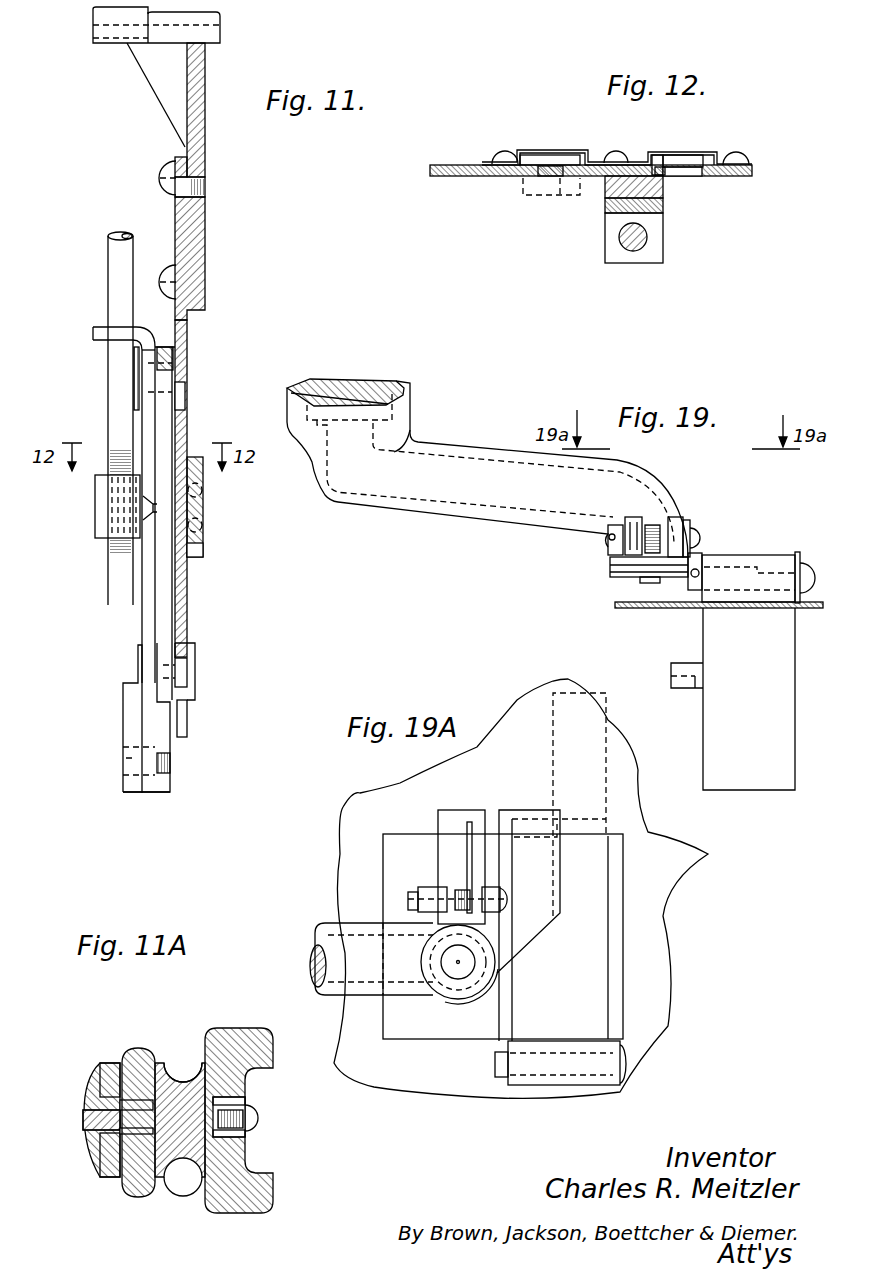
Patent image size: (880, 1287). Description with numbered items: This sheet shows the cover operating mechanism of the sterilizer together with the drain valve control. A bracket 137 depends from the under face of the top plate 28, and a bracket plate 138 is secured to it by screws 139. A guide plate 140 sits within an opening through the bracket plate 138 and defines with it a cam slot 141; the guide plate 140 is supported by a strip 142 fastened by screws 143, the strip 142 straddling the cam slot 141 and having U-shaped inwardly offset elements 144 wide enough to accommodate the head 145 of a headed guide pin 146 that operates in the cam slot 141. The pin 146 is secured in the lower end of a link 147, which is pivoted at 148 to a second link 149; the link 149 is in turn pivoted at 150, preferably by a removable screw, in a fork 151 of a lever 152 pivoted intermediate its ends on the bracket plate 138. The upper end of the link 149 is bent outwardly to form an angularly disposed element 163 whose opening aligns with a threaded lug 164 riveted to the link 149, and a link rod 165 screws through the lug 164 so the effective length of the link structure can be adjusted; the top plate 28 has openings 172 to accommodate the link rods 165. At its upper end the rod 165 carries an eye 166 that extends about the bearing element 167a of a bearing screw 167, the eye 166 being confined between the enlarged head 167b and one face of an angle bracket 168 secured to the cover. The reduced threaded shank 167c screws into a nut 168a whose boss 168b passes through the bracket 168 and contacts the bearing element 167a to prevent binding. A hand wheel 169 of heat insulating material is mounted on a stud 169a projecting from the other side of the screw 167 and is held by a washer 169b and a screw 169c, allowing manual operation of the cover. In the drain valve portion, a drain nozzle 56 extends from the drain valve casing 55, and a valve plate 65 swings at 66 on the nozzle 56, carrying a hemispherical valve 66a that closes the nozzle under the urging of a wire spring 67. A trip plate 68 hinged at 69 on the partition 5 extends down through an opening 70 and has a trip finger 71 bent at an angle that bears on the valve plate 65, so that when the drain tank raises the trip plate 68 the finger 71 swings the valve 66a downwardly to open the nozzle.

In FIG. 19, the partition 5 is at (641, 610).
In FIG. 19A, the partition 5 is at (665, 878).
In FIG. 11, the top plate 28 is at (213, 37).
In FIG. 19, the drain valve casing 55 is at (404, 392).
In FIG. 19, the drain nozzle 56 is at (461, 450).
In FIG. 19A, the drain nozzle 56 is at (342, 924).
In FIG. 19, the valve plate 65 is at (602, 568).
In FIG. 19A, the valve plate 65 is at (444, 813).
In FIG. 19, the pivot 66 is at (594, 540).
In FIG. 19A, the pivot 66 is at (400, 897).
In FIG. 19, the hemispherical valve 66a is at (612, 562).
In FIG. 19A, the hemispherical valve 66a is at (489, 968).
In FIG. 19, the wire spring 67 is at (645, 525).
In FIG. 19A, the wire spring 67 is at (461, 822).
In FIG. 19, the trip plate 68 is at (705, 735).
In FIG. 19A, the trip plate 68 is at (545, 742).
In FIG. 19, the hinge 69 is at (764, 566).
In FIG. 19A, the hinge 69 is at (487, 1063).
In FIG. 19A, the opening 70 is at (608, 949).
In FIG. 19, the trip finger 71 is at (680, 680).
In FIG. 19A, the trip finger 71 is at (525, 818).
In FIG. 11, the bracket 137 is at (197, 140).
In FIG. 11, the bracket plate 138 is at (168, 223).
In FIG. 12, the bracket plate 138 is at (449, 177).
In FIG. 11, the screws 139 is at (165, 174).
In FIG. 11, the guide plate 140 is at (180, 580).
In FIG. 12, the guide plate 140 is at (588, 177).
In FIG. 11, the cam slot 141 is at (177, 394).
In FIG. 12, the cam slot 141 is at (553, 172).
In FIG. 11, the strip 142 is at (181, 457).
In FIG. 12, the strip 142 is at (594, 160).
In FIG. 11, the screws 143 is at (194, 527).
In FIG. 12, the screws 143 is at (492, 151).
In FIG. 11, the inwardly offset elements 144 is at (196, 549).
In FIG. 12, the inwardly offset elements 144 is at (682, 152).
In FIG. 11, the head 145 is at (185, 669).
In FIG. 12, the head 145 is at (527, 160).
In FIG. 11, the headed guide pin 146 is at (177, 682).
In FIG. 12, the headed guide pin 146 is at (656, 183).
In FIG. 11, the link 147 is at (157, 603).
In FIG. 12, the link 147 is at (599, 180).
In FIG. 11, the pivot 148 is at (189, 352).
In FIG. 11, the second link 149 is at (132, 603).
In FIG. 12, the second link 149 is at (657, 217).
In FIG. 11, the pivot 150 is at (162, 772).
In FIG. 11, the fork 151 is at (125, 794).
In FIG. 11, the lever 152 is at (130, 660).
In FIG. 11, the angularly disposed element 163 is at (92, 328).
In FIG. 11, the lug 164 is at (86, 515).
In FIG. 12, the lug 164 is at (647, 253).
In FIG. 11, the link rod 165 is at (102, 262).
In FIG. 12, the link rod 165 is at (622, 250).
In FIG. 11A, the eye 166 is at (120, 1048).
In FIG. 11A, the bearing screw 167 is at (174, 1072).
In FIG. 11A, the bearing element 167a is at (130, 1138).
In FIG. 11A, the enlarged head 167b is at (185, 1170).
In FIG. 11A, the reduced threaded shank 167c is at (77, 1114).
In FIG. 11A, the angle bracket 168 is at (105, 1063).
In FIG. 11A, the nut 168a is at (92, 1068).
In FIG. 11A, the boss 168b is at (100, 1140).
In FIG. 11A, the hand wheel 169 is at (205, 1030).
In FIG. 11A, the stud 169a is at (238, 1100).
In FIG. 11A, the washer 169b is at (240, 1135).
In FIG. 11A, the screw 169c is at (238, 1120).
In FIG. 11, the openings 172 is at (155, 12).